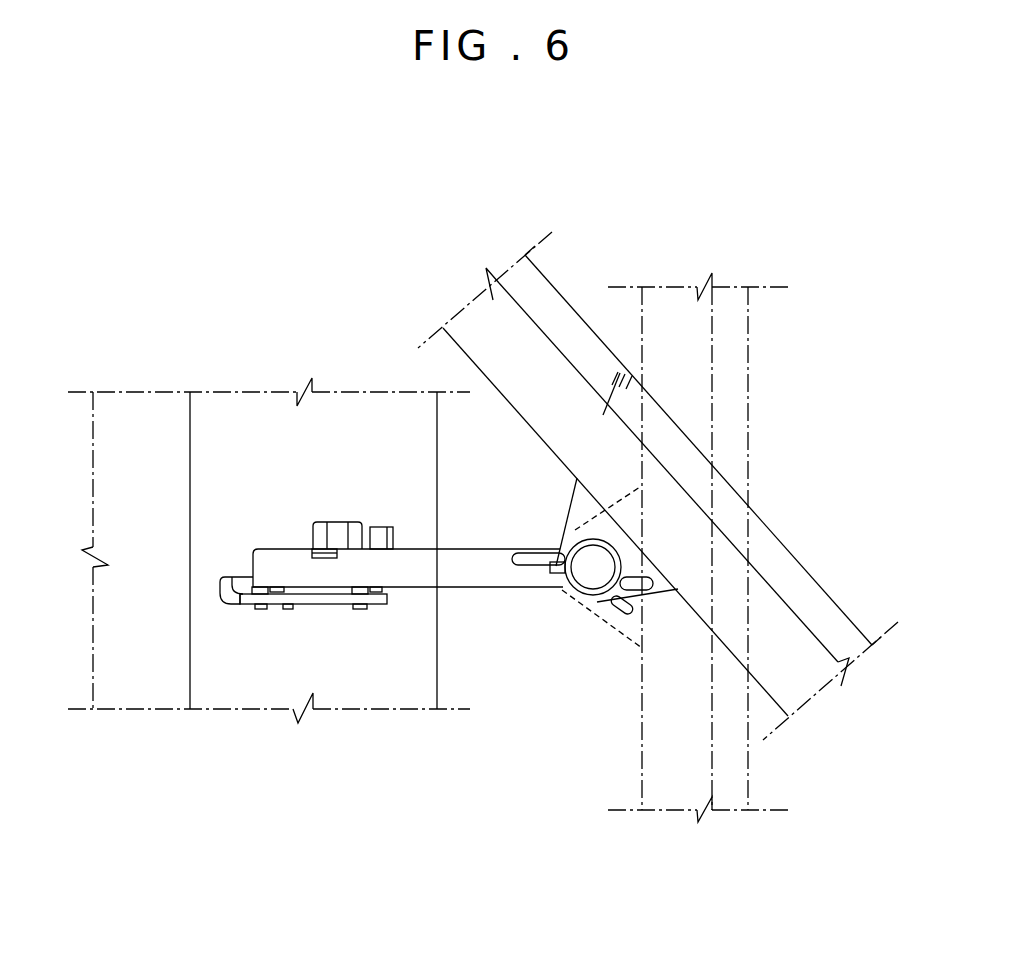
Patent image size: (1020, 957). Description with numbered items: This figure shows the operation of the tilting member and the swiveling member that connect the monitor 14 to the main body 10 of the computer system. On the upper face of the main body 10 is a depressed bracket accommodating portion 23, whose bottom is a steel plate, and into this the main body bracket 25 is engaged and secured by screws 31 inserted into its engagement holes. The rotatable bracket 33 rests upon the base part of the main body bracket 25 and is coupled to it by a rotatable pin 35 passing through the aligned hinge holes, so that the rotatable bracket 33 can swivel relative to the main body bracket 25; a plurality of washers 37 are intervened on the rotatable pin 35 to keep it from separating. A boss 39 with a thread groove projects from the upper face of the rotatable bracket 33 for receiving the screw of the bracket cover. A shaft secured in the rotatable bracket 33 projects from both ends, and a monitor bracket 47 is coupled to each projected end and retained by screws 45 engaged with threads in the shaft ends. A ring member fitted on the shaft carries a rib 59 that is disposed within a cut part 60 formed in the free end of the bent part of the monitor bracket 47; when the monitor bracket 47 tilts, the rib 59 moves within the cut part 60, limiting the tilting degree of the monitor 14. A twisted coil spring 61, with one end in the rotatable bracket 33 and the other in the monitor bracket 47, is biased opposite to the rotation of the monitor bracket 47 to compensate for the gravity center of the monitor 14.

The main body 10 is at (93, 621).
The monitor 14 is at (830, 595).
The bracket accommodating portion 23 is at (215, 604).
The main body bracket 25 is at (347, 599).
The screws 31 is at (263, 609).
The rotatable bracket 33 is at (415, 563).
The rotatable pin 35 is at (336, 522).
The washers 37 is at (313, 551).
The boss 39 is at (385, 527).
The screws 45 is at (592, 582).
The monitor bracket 47 is at (578, 518).
The rib 59 is at (558, 574).
The cut part 60 is at (578, 610).
The twisted coil spring 61 is at (525, 555).